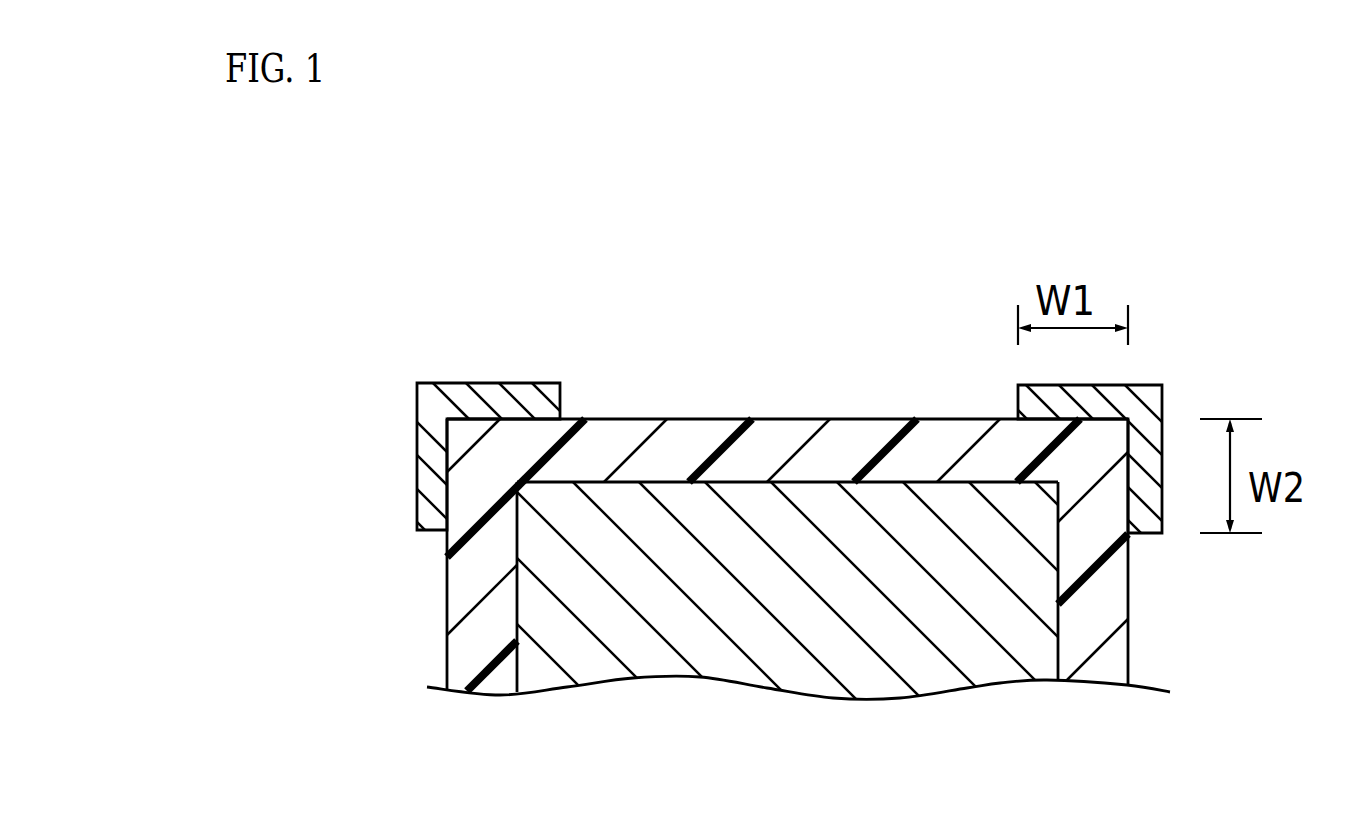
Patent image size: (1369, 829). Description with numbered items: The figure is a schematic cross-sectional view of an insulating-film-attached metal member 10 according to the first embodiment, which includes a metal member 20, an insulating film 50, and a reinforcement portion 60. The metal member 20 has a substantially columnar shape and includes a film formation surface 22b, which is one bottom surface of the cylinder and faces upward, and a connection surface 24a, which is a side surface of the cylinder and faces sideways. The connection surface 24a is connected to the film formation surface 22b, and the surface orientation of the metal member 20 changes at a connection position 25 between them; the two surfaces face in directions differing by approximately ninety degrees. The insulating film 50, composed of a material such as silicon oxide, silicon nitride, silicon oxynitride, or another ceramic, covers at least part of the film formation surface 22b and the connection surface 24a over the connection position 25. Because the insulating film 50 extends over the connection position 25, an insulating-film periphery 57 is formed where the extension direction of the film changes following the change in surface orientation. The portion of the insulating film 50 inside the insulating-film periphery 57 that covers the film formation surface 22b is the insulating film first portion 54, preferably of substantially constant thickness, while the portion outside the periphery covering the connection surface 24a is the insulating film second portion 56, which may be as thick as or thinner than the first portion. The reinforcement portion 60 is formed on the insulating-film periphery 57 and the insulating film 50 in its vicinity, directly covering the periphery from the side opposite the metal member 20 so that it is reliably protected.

The insulating-film-attached metal member 10 is at (966, 280).
The metal member 20 is at (848, 662).
The film formation surface 22b is at (748, 480).
The connection surface 24a is at (517, 640).
The connection position 25 is at (517, 480).
The insulating film 50 is at (690, 425).
The insulating film first portion 54 is at (866, 447).
The insulating film second portion 56 is at (472, 585).
The insulating-film periphery 57 is at (455, 414).
The reinforcement portion 60 is at (417, 383).